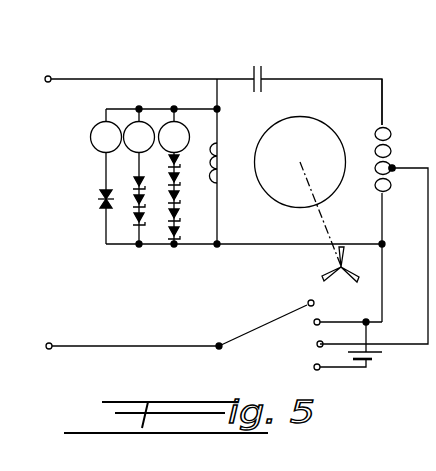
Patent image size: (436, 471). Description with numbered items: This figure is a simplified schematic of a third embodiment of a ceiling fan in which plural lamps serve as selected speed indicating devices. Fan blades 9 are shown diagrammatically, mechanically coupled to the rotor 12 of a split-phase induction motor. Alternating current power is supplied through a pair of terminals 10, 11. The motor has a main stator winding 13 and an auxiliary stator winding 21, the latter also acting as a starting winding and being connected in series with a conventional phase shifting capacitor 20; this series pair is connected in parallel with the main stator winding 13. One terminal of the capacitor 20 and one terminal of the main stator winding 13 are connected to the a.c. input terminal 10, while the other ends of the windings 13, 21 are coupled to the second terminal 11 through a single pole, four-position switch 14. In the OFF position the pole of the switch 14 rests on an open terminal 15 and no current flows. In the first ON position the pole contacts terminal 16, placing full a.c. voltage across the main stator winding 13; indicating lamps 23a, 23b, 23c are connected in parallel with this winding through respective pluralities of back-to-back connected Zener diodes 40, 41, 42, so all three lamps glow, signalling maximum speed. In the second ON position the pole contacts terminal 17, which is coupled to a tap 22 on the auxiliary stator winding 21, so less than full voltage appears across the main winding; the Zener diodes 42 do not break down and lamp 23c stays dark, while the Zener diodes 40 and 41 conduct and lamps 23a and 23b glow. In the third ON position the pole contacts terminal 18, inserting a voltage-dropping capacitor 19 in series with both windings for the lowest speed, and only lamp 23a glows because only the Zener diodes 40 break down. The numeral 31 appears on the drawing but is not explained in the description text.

The fan blades 9 is at (349, 270).
The a.c. input terminal 10 is at (46, 76).
The second terminal 11 is at (50, 343).
The rotor 12 is at (308, 130).
The main stator winding 13 is at (223, 180).
The single pole, four-position switch 14 is at (246, 312).
The open or rest terminal 15 is at (309, 300).
The terminal 16 is at (314, 322).
The terminal 17 is at (317, 344).
The terminal 18 is at (314, 367).
The voltage-dropping capacitor 19 is at (385, 359).
The phase shifting capacitor 20 is at (259, 63).
The auxiliary stator winding 21 is at (390, 143).
The tap 22 is at (393, 165).
The indicating lamp 23a is at (97, 127).
The indicating lamp 23b is at (135, 125).
The indicating lamp 23c is at (188, 132).
The winding 31 is at (409, 97).
The Zener diodes 40 is at (108, 214).
The Zener diodes 41 is at (137, 230).
The Zener diodes 42 is at (166, 156).